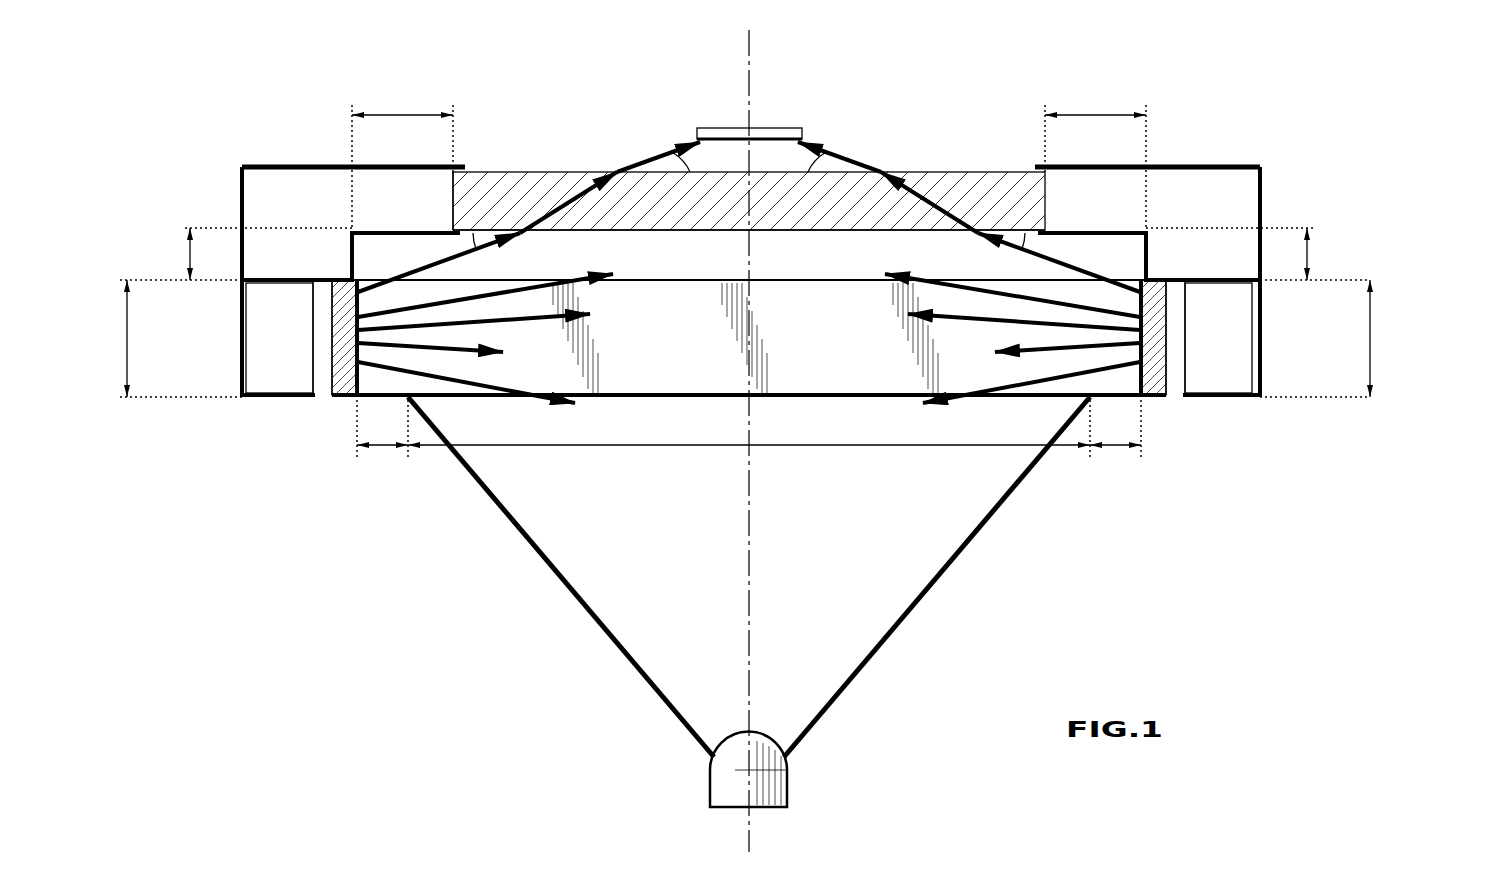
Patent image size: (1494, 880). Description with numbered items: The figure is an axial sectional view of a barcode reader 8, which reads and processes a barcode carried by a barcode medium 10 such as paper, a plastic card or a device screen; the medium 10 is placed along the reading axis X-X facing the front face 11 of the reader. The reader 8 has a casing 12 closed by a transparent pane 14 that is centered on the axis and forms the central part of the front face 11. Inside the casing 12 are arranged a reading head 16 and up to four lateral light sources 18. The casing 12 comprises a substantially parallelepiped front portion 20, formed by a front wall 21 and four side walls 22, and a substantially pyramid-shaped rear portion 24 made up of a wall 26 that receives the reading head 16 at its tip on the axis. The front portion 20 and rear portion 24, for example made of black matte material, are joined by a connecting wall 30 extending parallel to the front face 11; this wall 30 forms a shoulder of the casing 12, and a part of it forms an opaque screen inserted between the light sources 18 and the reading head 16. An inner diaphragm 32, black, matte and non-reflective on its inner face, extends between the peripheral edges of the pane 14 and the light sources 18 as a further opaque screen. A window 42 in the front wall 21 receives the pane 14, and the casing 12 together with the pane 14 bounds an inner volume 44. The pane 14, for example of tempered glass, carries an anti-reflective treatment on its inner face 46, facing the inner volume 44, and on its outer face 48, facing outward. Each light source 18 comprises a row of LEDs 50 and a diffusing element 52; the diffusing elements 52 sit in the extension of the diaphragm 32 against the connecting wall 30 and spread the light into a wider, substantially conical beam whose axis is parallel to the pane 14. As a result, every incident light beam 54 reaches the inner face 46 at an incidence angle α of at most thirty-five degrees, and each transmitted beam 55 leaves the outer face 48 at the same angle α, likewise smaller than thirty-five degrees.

The barcode reader 8 is at (1278, 100).
The barcode medium 10 is at (788, 120).
The front face 11 is at (940, 85).
The casing 12 is at (1276, 198).
The transparent pane 14 is at (981, 166).
The reading head 16 is at (784, 785).
The lateral light source 18 is at (178, 315).
The front portion 20 is at (1382, 283).
The front wall 21 is at (1212, 164).
The side wall 22 is at (238, 298).
The rear portion 24 is at (898, 672).
The wall 26 is at (944, 576).
The connecting wall 30 is at (322, 400).
The inner diaphragm 32 is at (402, 231).
The window 42 is at (457, 192).
The inner volume 44 is at (546, 472).
The inner face 46 is at (676, 232).
The outer face 48 is at (560, 171).
The LEDs 50 is at (258, 327).
The diffusing element 52 is at (342, 358).
The incident light beam 54 is at (484, 250).
The transmitted beam 55 is at (668, 152).